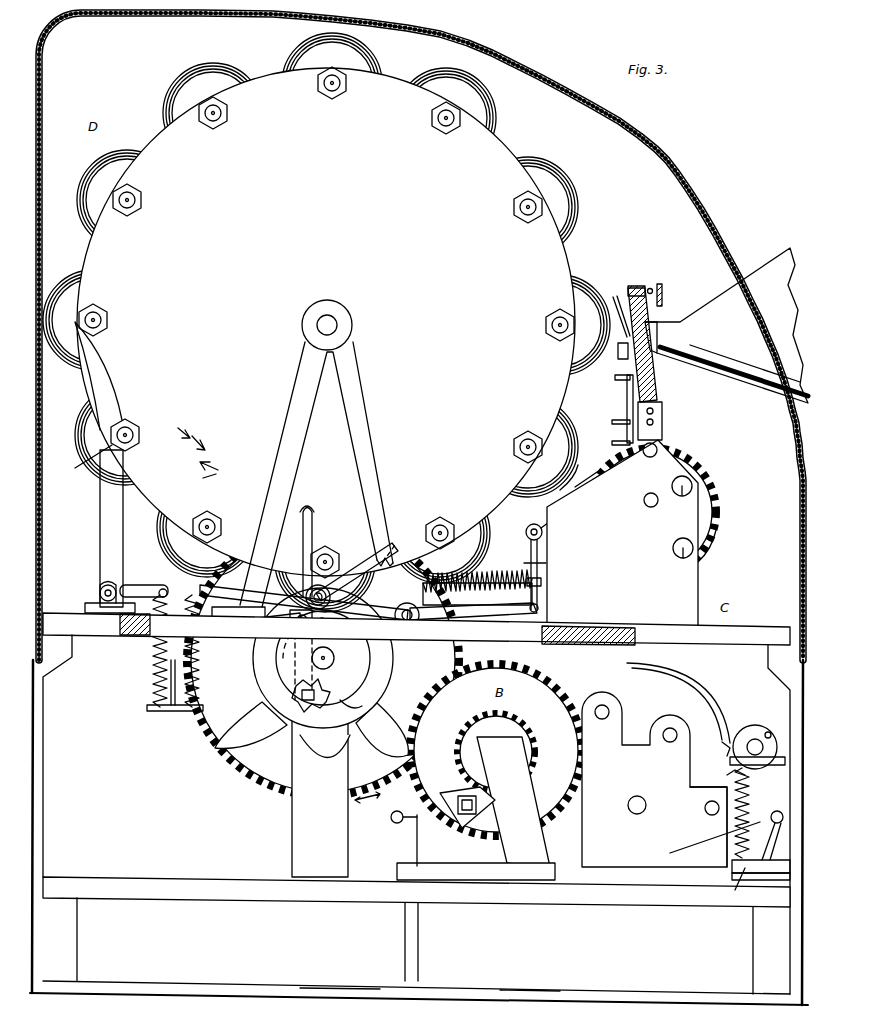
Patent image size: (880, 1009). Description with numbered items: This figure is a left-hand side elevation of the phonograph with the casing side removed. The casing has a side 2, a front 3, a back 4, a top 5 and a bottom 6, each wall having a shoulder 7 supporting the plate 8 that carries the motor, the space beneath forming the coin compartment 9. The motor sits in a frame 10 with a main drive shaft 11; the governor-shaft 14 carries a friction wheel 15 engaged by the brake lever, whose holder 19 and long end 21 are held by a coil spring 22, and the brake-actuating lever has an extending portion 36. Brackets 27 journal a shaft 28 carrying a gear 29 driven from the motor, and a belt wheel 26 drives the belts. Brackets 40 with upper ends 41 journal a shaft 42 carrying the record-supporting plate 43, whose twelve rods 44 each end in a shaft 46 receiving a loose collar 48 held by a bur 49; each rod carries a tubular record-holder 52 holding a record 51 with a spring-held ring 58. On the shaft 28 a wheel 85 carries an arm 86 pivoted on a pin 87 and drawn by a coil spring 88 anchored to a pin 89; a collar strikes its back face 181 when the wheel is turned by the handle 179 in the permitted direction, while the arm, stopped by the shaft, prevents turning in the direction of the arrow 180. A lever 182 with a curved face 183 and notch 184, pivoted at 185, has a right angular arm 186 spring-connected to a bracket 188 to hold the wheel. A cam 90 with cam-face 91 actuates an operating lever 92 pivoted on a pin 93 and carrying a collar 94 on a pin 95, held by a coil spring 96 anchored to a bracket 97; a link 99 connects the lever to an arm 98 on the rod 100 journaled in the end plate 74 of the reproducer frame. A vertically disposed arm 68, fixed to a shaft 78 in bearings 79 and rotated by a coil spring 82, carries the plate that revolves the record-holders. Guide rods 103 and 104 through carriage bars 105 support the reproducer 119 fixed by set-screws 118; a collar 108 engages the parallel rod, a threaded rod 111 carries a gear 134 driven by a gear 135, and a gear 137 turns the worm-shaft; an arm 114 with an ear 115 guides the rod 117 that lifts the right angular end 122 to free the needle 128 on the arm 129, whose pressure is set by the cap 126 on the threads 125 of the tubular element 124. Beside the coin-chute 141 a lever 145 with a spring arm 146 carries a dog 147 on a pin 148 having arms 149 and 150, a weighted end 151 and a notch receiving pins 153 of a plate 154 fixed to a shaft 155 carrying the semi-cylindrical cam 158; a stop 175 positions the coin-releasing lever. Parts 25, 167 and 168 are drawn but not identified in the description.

The side 2 is at (160, 855).
The front 3 is at (790, 675).
The back 4 is at (44, 808).
The top 5 is at (650, 630).
The bottom 6 is at (338, 985).
The shoulder 7 is at (60, 898).
The motor-supporting plate 8 is at (268, 895).
The money compartment 9 is at (530, 967).
The motor frame 10 is at (654, 779).
The main drive shaft 11 is at (510, 752).
The governor-shaft 14 is at (712, 815).
The friction wheel 15 is at (720, 795).
The holder 19 is at (725, 776).
The long end of brake lever 21 is at (730, 760).
The coil spring 22 is at (733, 855).
The hole 25 is at (636, 814).
The belt wheel 26 is at (478, 730).
The brackets 27 is at (320, 788).
The shaft 28 is at (334, 659).
The gear 29 is at (232, 752).
The extending portion of brake-actuating lever 36 is at (397, 662).
The supports or brackets 40 is at (348, 428).
The upper ends of brackets 41 is at (337, 335).
The shaft 42 is at (352, 325).
The record-supporting plate 43 is at (326, 322).
The shafts or rods 44 is at (318, 88).
The shaft 46 is at (430, 118).
The collar 48 is at (135, 437).
The bur 49 is at (318, 108).
The record 51 is at (300, 48).
The record-holder 52 is at (310, 60).
The movable ring 58 is at (368, 60).
The vertically disposed arm 68 is at (542, 581).
The end plate 74 is at (622, 533).
The horizontally disposed shaft 78 is at (498, 583).
The bearings or brackets 79 is at (540, 602).
The coil spring 82 is at (477, 587).
The wheel 85 is at (262, 700).
The arm 86 is at (314, 512).
The pin 87 is at (288, 620).
The coil spring 88 is at (310, 712).
The pin 89 is at (356, 703).
The cam 90 is at (319, 659).
The cam-face 91 is at (314, 621).
The operating lever 92 is at (475, 618).
The pin 93 is at (415, 620).
The collar 94 is at (328, 588).
The pin 95 is at (312, 590).
The coil spring 96 is at (199, 655).
The bracket 97 is at (176, 710).
The arm 98 is at (545, 536).
The link 99 is at (548, 563).
The rod or shaft 100 is at (578, 515).
The guide rod 103 is at (644, 455).
The guide rod 104 is at (644, 500).
The carriage bars 105 is at (664, 437).
The collar 108 is at (592, 473).
The threaded rod 111 is at (680, 497).
The arm 114 is at (612, 443).
The ear 115 is at (612, 422).
The rod 117 is at (626, 400).
The set-screws 118 is at (655, 418).
The reproducer 119 is at (655, 368).
The right angular end 122 is at (614, 378).
The tubular element 124 is at (640, 286).
The external threads 125 is at (655, 288).
The cap 126 is at (664, 295).
The needle 128 is at (616, 296).
The arm 129 is at (617, 351).
The gear 134 is at (718, 476).
The gear 135 is at (682, 558).
The gear 137 is at (720, 548).
The coin-chute 141 is at (412, 825).
The coin and cam-actuated lever 145 is at (710, 842).
The spring arm 146 is at (462, 730).
The dog 147 is at (773, 835).
The pin 148 is at (761, 864).
The arm of dog 150 is at (761, 880).
The weighted end 151 is at (737, 886).
The pins 153 is at (724, 742).
The plate 154 is at (755, 725).
The arm of dog 149 is at (760, 740).
The shaft 155 is at (778, 725).
The semi-cylindrical cam 158 is at (705, 672).
The spring 167 is at (152, 664).
The gear 168 is at (472, 678).
The stop 175 is at (368, 778).
The handle 179 is at (190, 431).
The arrow 180 is at (219, 470).
The back face 181 is at (300, 545).
The lever 182 is at (108, 508).
The curved face 183 is at (105, 381).
The notch 184 is at (81, 465).
The pivot 185 is at (98, 592).
The right angular arm 186 is at (140, 588).
The bracket 188 is at (152, 712).